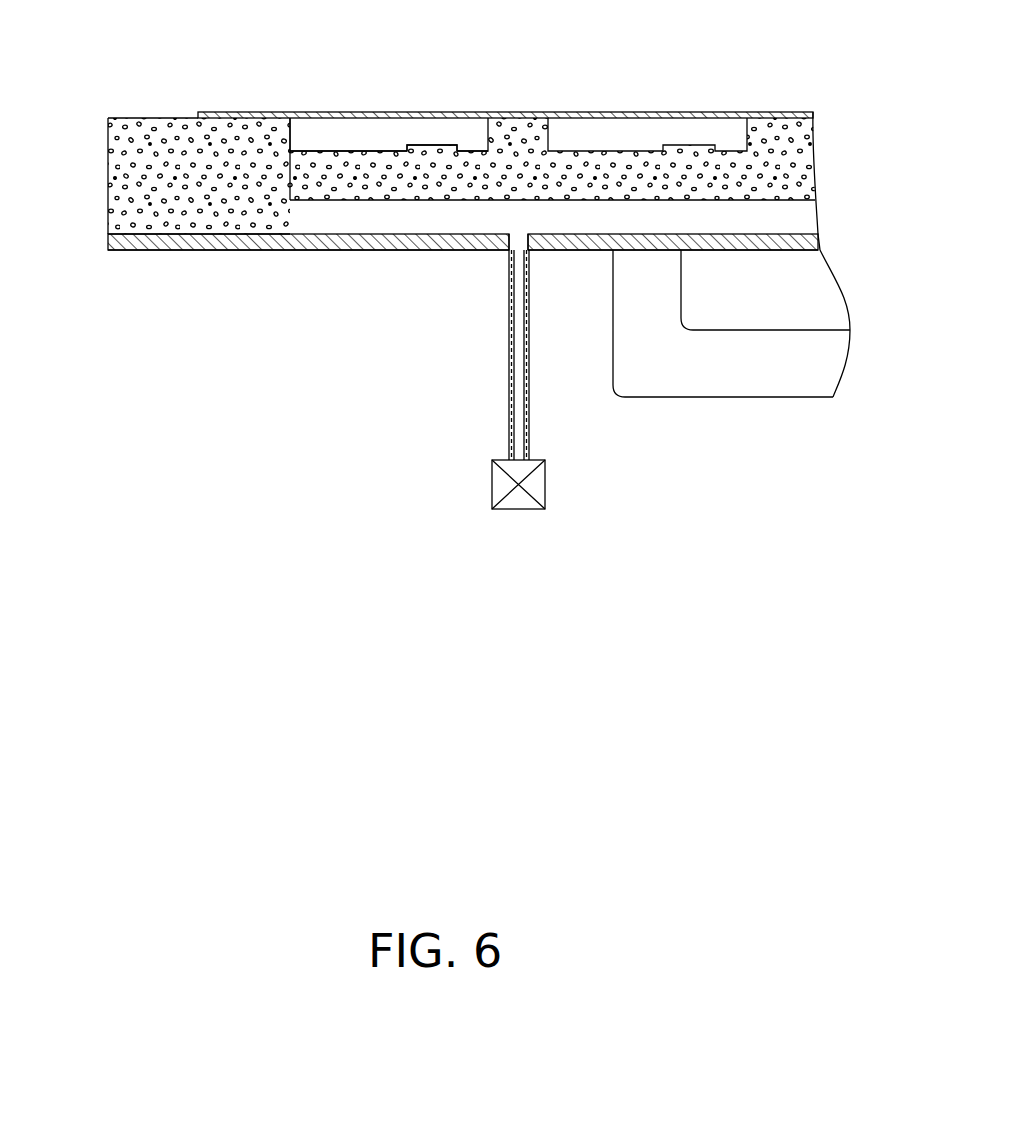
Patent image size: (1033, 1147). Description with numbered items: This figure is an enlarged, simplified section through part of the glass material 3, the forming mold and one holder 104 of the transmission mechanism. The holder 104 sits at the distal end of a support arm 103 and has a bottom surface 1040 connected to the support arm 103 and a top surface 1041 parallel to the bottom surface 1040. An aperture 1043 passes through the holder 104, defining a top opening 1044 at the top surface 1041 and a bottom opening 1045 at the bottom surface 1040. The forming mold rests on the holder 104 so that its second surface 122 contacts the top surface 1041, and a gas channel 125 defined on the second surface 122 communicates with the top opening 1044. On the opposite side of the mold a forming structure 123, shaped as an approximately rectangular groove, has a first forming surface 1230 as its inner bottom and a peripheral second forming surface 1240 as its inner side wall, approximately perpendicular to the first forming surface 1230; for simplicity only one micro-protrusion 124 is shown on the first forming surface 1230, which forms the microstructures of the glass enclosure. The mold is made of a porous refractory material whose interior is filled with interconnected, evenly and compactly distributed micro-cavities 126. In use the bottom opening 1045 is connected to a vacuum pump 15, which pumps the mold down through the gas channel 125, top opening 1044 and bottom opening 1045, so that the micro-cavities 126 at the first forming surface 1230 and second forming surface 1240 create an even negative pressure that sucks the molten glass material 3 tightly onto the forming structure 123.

The glass material 3 is at (220, 115).
The vacuum pump 15 is at (500, 486).
The support arm 103 is at (718, 378).
The holder 104 is at (150, 248).
The bottom surface 1040 is at (252, 250).
The top surface 1041 is at (138, 232).
The aperture 1043 is at (512, 247).
The top opening 1044 is at (518, 242).
The bottom opening 1045 is at (510, 261).
The second surface 122 is at (185, 243).
The forming structure 123 is at (322, 137).
The first forming surface 1230 is at (375, 152).
The second forming surface 1240 is at (293, 132).
The micro-protrusion 124 is at (428, 146).
The gas channel 125 is at (362, 216).
The micro-cavities 126 is at (118, 130).